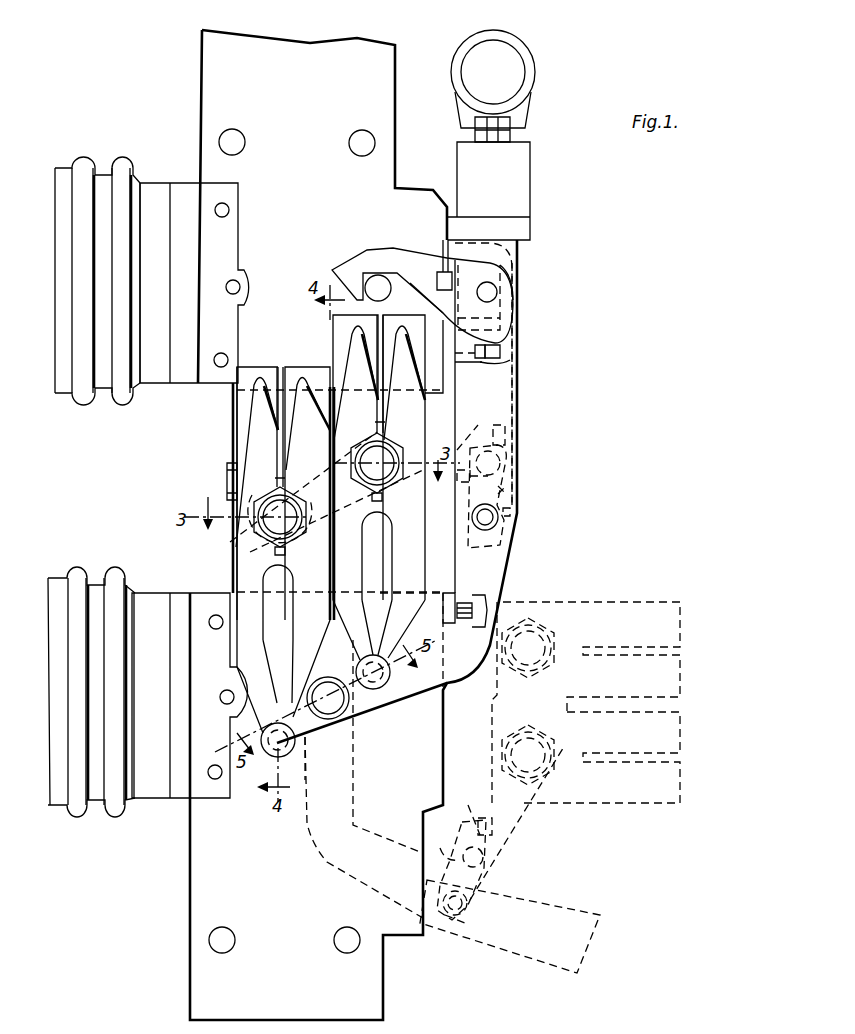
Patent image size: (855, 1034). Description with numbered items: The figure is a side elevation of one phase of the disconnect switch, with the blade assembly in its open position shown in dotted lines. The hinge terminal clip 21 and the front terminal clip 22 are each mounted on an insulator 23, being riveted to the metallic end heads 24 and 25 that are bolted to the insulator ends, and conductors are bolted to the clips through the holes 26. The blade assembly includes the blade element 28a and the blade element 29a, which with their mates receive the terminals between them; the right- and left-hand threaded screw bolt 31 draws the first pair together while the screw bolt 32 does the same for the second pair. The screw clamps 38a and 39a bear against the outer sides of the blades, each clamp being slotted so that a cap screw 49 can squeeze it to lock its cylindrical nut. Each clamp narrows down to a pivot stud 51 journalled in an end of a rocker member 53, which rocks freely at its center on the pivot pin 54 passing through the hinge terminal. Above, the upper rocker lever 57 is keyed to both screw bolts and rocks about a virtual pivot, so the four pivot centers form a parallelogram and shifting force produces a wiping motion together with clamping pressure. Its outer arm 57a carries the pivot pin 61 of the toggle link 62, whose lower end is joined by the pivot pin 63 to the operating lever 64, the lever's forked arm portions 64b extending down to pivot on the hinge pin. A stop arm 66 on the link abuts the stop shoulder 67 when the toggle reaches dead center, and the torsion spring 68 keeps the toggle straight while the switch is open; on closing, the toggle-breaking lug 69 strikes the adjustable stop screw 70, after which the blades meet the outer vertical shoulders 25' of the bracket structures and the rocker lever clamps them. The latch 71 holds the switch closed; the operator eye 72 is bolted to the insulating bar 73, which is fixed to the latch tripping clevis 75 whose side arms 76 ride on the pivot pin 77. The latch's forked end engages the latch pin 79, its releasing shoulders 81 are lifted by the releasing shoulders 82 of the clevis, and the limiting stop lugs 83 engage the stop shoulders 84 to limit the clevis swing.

The hinge terminal clip 21 is at (422, 768).
The front terminal clip 22 is at (345, 190).
The insulators 23 is at (70, 165).
The metallic end head 24 is at (197, 603).
The metallic end head (bracket structure) 25 is at (194, 264).
The outer vertical shoulders 25' is at (253, 473).
The holes 26 is at (349, 143).
The blade element 28a is at (243, 404).
The blade element 29a is at (348, 322).
The screw bolt 31 is at (264, 526).
The screw bolt 32 is at (372, 445).
The screw clamp 38a is at (258, 432).
The screw clamp 39a is at (360, 345).
The cap screw 49 is at (226, 478).
The pivot stud 51 is at (292, 752).
The rocker member 53 is at (352, 704).
The pivot pin (hinge pin) 54 is at (372, 492).
The upper rocker lever 57 is at (312, 540).
The outer arm of rocker lever 57a is at (570, 822).
The pivot pin (knuckle pivot) 61 is at (500, 465).
The toggle link 62 is at (470, 498).
The pivot pin 63 is at (500, 520).
The operating lever 64 is at (505, 406).
The arm portions 64b is at (354, 795).
The stop arm 66 is at (507, 435).
The stop shoulder 67 is at (466, 480).
The torsion spring 68 is at (512, 512).
The toggle-breaking lug 69 is at (507, 494).
The toggle-breaking stop screw 70 is at (470, 600).
The latch 71 is at (360, 266).
The switch operator (eye) 72 is at (527, 55).
The insulating bar 73 is at (520, 185).
The latch tripping clevis 75 is at (516, 270).
The side arms 76 is at (505, 338).
The pivot pin 77 is at (492, 292).
The latch pin 79 is at (380, 278).
The releasing shoulders 81 is at (446, 282).
The releasing shoulders 82 is at (435, 297).
The limiting stop lugs 83 is at (497, 366).
The stop shoulders 84 is at (502, 354).